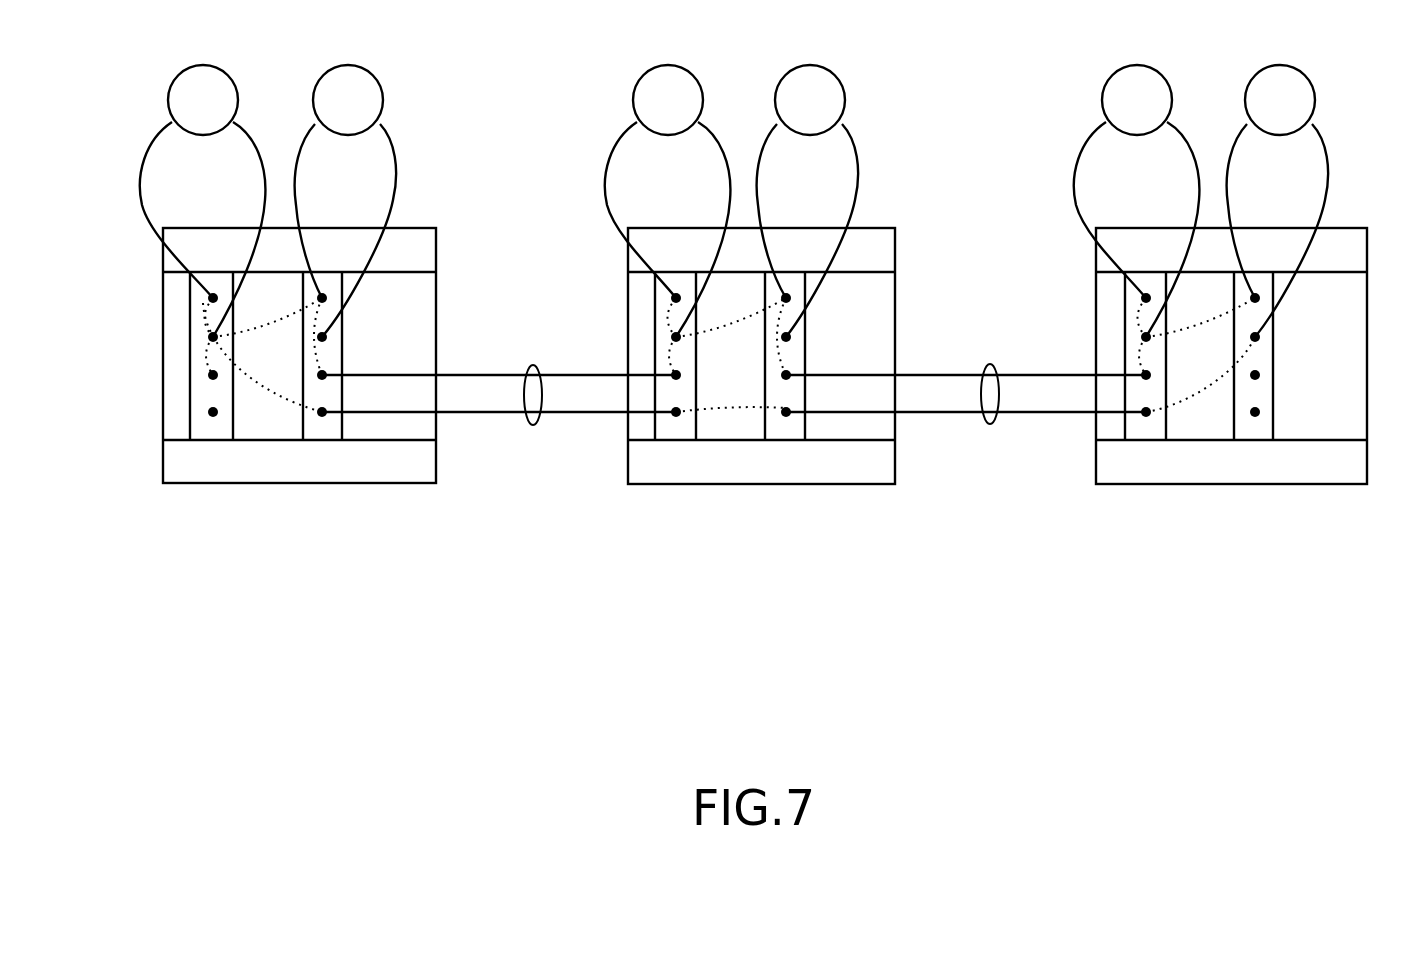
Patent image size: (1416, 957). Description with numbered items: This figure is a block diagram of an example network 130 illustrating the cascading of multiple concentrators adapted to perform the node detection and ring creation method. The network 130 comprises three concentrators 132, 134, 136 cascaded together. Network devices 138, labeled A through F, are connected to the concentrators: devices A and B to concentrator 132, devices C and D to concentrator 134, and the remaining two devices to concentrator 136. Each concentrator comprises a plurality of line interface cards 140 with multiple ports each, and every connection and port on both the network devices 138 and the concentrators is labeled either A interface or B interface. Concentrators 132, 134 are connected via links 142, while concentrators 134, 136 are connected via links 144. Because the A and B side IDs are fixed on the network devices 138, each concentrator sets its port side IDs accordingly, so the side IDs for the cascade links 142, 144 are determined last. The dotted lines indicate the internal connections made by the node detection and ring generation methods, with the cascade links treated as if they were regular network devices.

The example network 130 is at (215, 675).
The concentrator 132 is at (345, 485).
The concentrator 134 is at (820, 485).
The concentrator 136 is at (1295, 485).
The network devices 138 is at (208, 64).
The line interface cards 140 is at (215, 430).
The links 142 is at (533, 365).
The links 144 is at (990, 365).